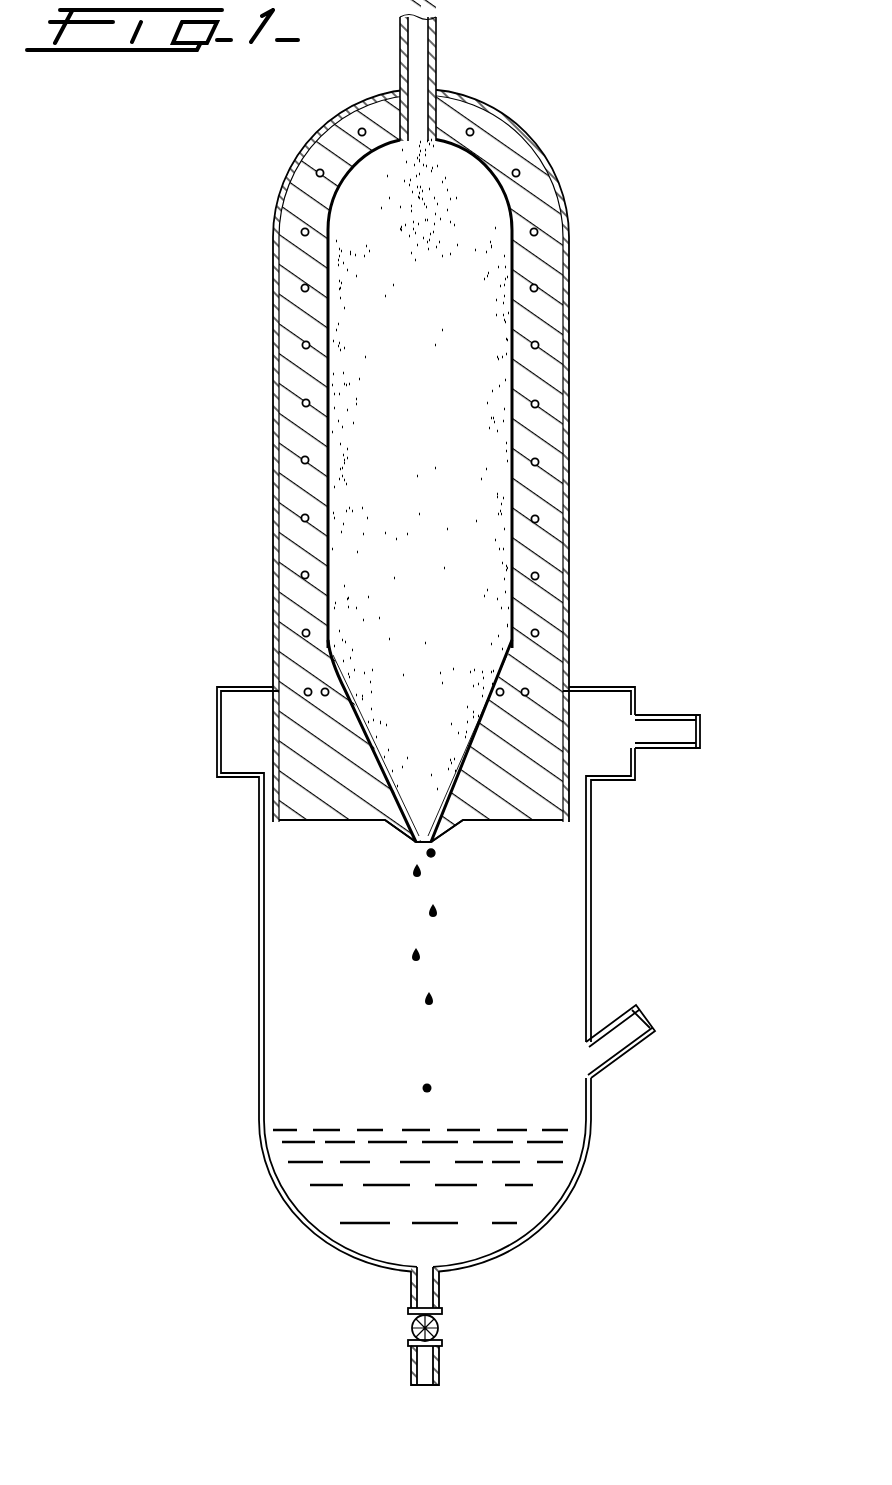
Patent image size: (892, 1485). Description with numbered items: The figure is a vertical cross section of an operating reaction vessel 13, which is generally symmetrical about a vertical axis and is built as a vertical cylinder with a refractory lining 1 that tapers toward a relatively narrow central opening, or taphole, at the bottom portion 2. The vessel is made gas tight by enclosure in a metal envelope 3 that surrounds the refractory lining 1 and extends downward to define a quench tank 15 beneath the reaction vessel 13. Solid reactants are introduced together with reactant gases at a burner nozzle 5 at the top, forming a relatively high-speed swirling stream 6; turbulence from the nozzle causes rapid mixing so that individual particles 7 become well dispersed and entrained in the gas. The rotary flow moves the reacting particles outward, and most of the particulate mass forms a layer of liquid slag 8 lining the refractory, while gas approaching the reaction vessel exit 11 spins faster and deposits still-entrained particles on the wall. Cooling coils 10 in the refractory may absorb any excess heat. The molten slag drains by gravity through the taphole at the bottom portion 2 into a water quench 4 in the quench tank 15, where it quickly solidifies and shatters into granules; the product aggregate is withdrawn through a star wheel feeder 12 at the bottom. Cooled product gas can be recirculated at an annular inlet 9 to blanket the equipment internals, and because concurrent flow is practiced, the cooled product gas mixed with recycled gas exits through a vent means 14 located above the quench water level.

The refractory lining 1 is at (540, 430).
The bottom portion 2 is at (410, 841).
The metal envelope 3 is at (567, 243).
The water quench 4 is at (542, 1185).
The burner nozzle 5 is at (436, 50).
The high-speed stream 6 is at (437, 167).
The individual particles 7 is at (363, 600).
The layer of liquid slag 8 is at (461, 722).
The annular inlet 9 is at (666, 716).
The cooling coils 10 is at (540, 344).
The reaction vessel exit 11 is at (429, 838).
The star wheel feeder 12 is at (444, 1322).
The reaction vessel 13 is at (425, 524).
The vent means 14 is at (658, 1017).
The quench tank 15 is at (558, 958).